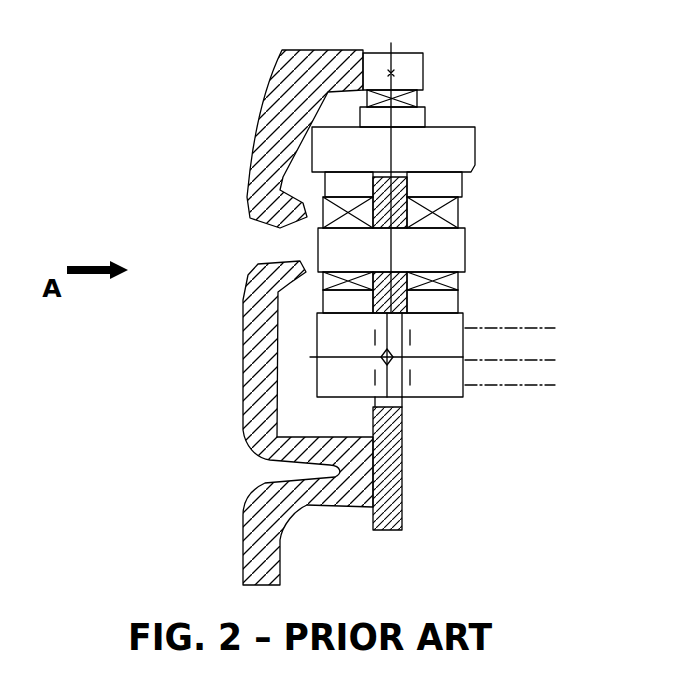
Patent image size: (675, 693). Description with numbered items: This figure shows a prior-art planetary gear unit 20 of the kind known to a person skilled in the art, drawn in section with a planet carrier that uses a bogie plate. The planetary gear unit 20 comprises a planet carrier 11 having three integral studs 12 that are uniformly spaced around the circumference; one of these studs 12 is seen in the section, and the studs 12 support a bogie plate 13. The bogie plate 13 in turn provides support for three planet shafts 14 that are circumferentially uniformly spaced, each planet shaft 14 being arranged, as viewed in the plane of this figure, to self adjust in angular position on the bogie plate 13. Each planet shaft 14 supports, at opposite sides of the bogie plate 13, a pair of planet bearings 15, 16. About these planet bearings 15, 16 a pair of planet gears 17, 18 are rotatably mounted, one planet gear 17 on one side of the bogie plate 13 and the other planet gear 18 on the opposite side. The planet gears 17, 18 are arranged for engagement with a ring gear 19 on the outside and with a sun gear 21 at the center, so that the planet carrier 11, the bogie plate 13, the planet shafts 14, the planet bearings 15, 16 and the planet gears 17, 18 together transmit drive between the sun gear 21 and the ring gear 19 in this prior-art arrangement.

The planetary gear unit 20 is at (152, 77).
The planet carrier 11 is at (247, 170).
The stud 12 is at (395, 461).
The bogie plate 13 is at (401, 513).
The planet shaft 14 is at (465, 253).
The planet bearing 15 is at (458, 216).
The planet bearing 16 is at (322, 277).
The planet gear 17 is at (462, 192).
The planet gear 18 is at (307, 232).
The ring gear 19 is at (474, 150).
The sun gear 21 is at (443, 347).